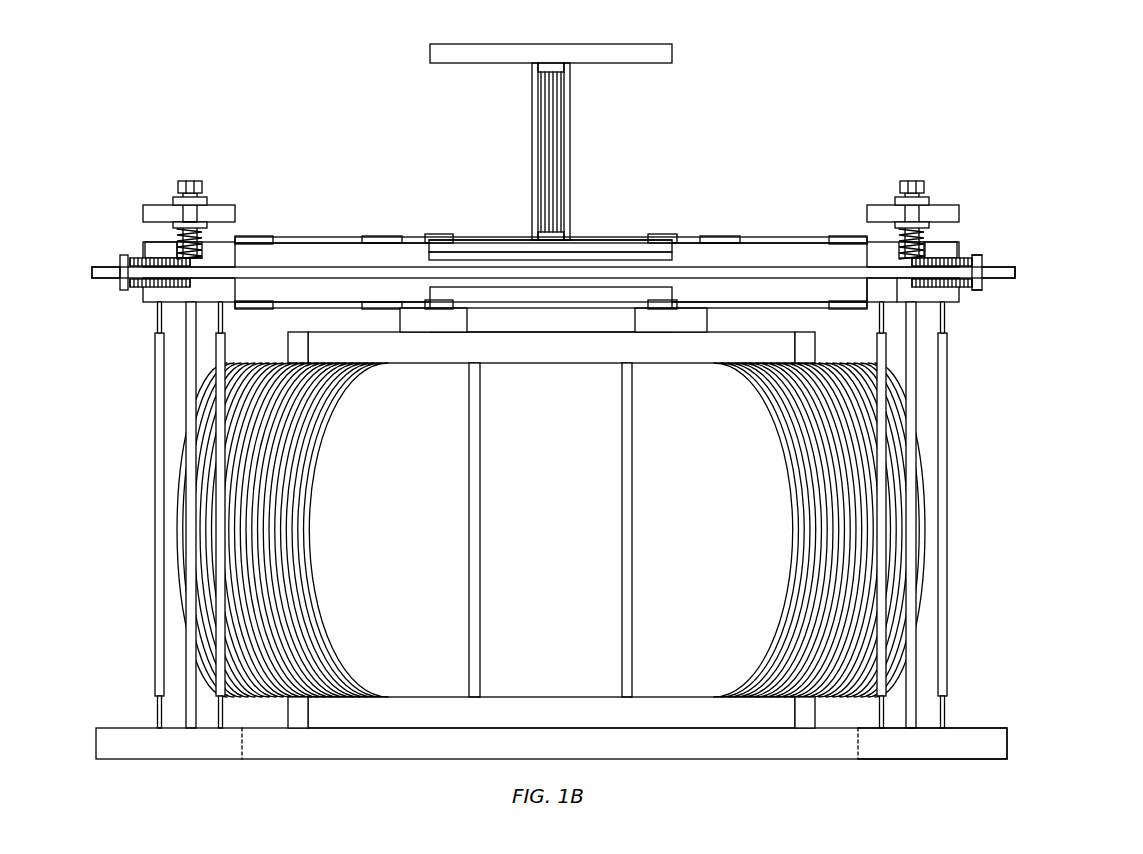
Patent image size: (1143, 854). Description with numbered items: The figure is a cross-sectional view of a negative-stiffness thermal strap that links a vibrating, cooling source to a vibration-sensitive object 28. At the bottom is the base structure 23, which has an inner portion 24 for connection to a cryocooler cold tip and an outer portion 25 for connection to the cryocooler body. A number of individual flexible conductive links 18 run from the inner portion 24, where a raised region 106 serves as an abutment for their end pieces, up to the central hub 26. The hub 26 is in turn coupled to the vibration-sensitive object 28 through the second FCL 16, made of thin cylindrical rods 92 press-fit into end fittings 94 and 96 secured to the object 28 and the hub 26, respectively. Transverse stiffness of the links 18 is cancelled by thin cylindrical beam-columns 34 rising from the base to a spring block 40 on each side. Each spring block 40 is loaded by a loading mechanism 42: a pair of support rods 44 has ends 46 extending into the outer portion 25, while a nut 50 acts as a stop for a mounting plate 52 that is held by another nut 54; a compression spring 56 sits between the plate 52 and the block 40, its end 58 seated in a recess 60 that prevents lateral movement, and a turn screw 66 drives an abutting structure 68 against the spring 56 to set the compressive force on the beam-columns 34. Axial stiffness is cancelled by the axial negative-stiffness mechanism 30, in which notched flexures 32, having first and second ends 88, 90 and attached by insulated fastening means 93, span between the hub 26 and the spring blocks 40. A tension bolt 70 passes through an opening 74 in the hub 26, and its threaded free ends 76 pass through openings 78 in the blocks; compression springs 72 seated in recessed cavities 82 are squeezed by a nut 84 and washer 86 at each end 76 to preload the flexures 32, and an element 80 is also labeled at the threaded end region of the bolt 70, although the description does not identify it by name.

The second FCL 16 is at (455, 160).
The FCL 18 is at (297, 590).
The base structure 23 is at (178, 770).
The inner portion 24 is at (345, 745).
The outer portion 25 is at (920, 745).
The central hub 26 is at (612, 363).
The vibration-sensitive object 28 is at (430, 50).
The axial negative-stiffness mechanism 30 is at (1047, 273).
The flexure 32 is at (318, 237).
The beam-column 34 is at (160, 560).
The spring block 40 is at (218, 292).
The loading mechanism 42 is at (912, 162).
The support rod 44 is at (190, 600).
The end 46 is at (185, 728).
The nut 50 is at (185, 225).
The mounting plate 52 is at (235, 215).
The nut 54 is at (207, 200).
The compression spring 56 is at (183, 246).
The end of compression spring 58 is at (160, 250).
The recess 60 is at (205, 240).
The turn screw 66 is at (201, 185).
The abutting structure 68 is at (175, 226).
The tension bolt 70 is at (808, 270).
The compression spring 72 is at (974, 286).
The opening 74 is at (612, 258).
The free end 76 is at (100, 273).
The opening 78 is at (873, 290).
The end nut 80 is at (976, 256).
The recessed cavity 82 is at (132, 288).
The nut 84 is at (112, 292).
The washer 86 is at (124, 290).
The first end 88 is at (442, 236).
The second end 90 is at (258, 240).
The thin cylindrical rod 92 is at (555, 134).
The insulated fastening means 93 is at (238, 246).
The end fitting 94 is at (570, 68).
The end fitting 96 is at (572, 238).
The raised region 106 is at (683, 697).